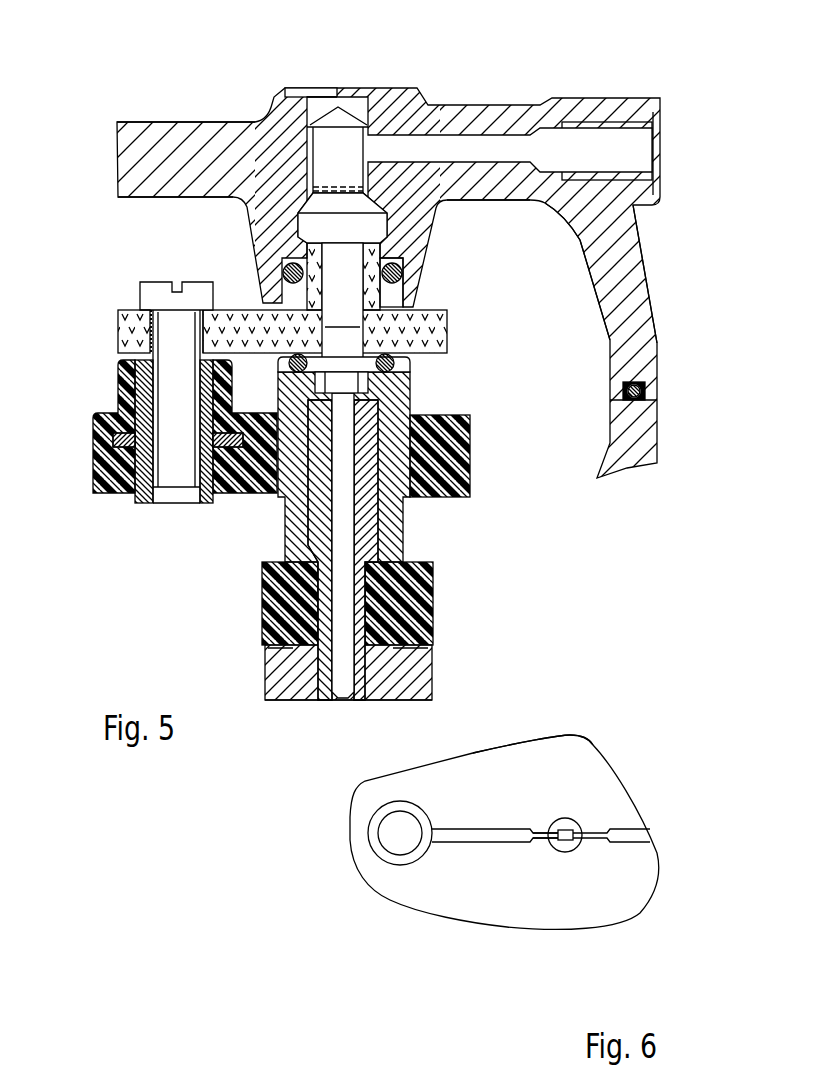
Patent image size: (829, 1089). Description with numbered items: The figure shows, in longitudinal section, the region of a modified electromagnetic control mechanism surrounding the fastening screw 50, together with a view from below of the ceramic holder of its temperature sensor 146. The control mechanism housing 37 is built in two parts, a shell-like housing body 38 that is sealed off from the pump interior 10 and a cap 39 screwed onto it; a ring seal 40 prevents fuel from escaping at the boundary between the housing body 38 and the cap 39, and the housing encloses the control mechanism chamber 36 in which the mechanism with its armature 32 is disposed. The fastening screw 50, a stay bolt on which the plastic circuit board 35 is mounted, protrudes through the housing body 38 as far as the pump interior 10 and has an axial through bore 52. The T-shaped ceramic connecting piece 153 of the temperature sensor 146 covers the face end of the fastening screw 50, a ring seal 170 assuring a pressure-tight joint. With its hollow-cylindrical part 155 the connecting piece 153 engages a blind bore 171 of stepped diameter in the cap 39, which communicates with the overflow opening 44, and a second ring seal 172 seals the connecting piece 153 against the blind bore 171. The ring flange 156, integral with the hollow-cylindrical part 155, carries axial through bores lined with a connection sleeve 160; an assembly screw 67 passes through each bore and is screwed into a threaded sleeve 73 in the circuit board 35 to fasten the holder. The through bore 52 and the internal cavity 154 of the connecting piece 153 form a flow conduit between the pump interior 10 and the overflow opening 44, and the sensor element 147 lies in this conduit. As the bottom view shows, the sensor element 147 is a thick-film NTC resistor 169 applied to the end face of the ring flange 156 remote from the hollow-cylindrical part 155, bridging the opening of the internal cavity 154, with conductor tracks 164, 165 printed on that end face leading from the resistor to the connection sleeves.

In FIG. 5, the control mechanism housing 37 is at (178, 116).
In FIG. 5, the internal cavity 154 is at (338, 273).
In FIG. 6, the internal cavity 154 is at (550, 845).
In FIG. 5, the overflow opening 44 is at (296, 87).
In FIG. 5, the blind bore 171 is at (396, 262).
In FIG. 5, the second ring seal 172 is at (401, 262).
In FIG. 5, the hollow-cylindrical part 155 is at (252, 312).
In FIG. 5, the fastening screw 67 is at (158, 297).
In FIG. 5, the connection sleeve 160 is at (140, 323).
In FIG. 6, the connection sleeve 160 is at (385, 857).
In FIG. 5, the ring flange 156 is at (143, 347).
In FIG. 6, the ring flange 156 is at (587, 747).
In FIG. 5, the threaded sleeve 73 is at (147, 488).
In FIG. 5, the control mechanism chamber 36 is at (495, 250).
In FIG. 5, the cap 39 is at (605, 272).
In FIG. 5, the connecting piece 153 is at (447, 323).
In FIG. 5, the ring seal 170 is at (395, 367).
In FIG. 5, the ring seal 40 is at (610, 393).
In FIG. 5, the housing body 38 is at (392, 683).
In FIG. 5, the circuit board 35 is at (440, 470).
In FIG. 5, the through bore 52 is at (342, 512).
In FIG. 5, the fastening screw 50 is at (365, 542).
In FIG. 5, the armature 32 is at (397, 610).
In FIG. 5, the pump interior 10 is at (357, 738).
In FIG. 6, the temperature sensor 146 is at (408, 908).
In FIG. 6, the conductor track 165 is at (463, 835).
In FIG. 6, the sensor element 147 is at (563, 847).
In FIG. 6, the thick-film NTC resistor 169 is at (570, 823).
In FIG. 6, the conductor track 164 is at (618, 833).